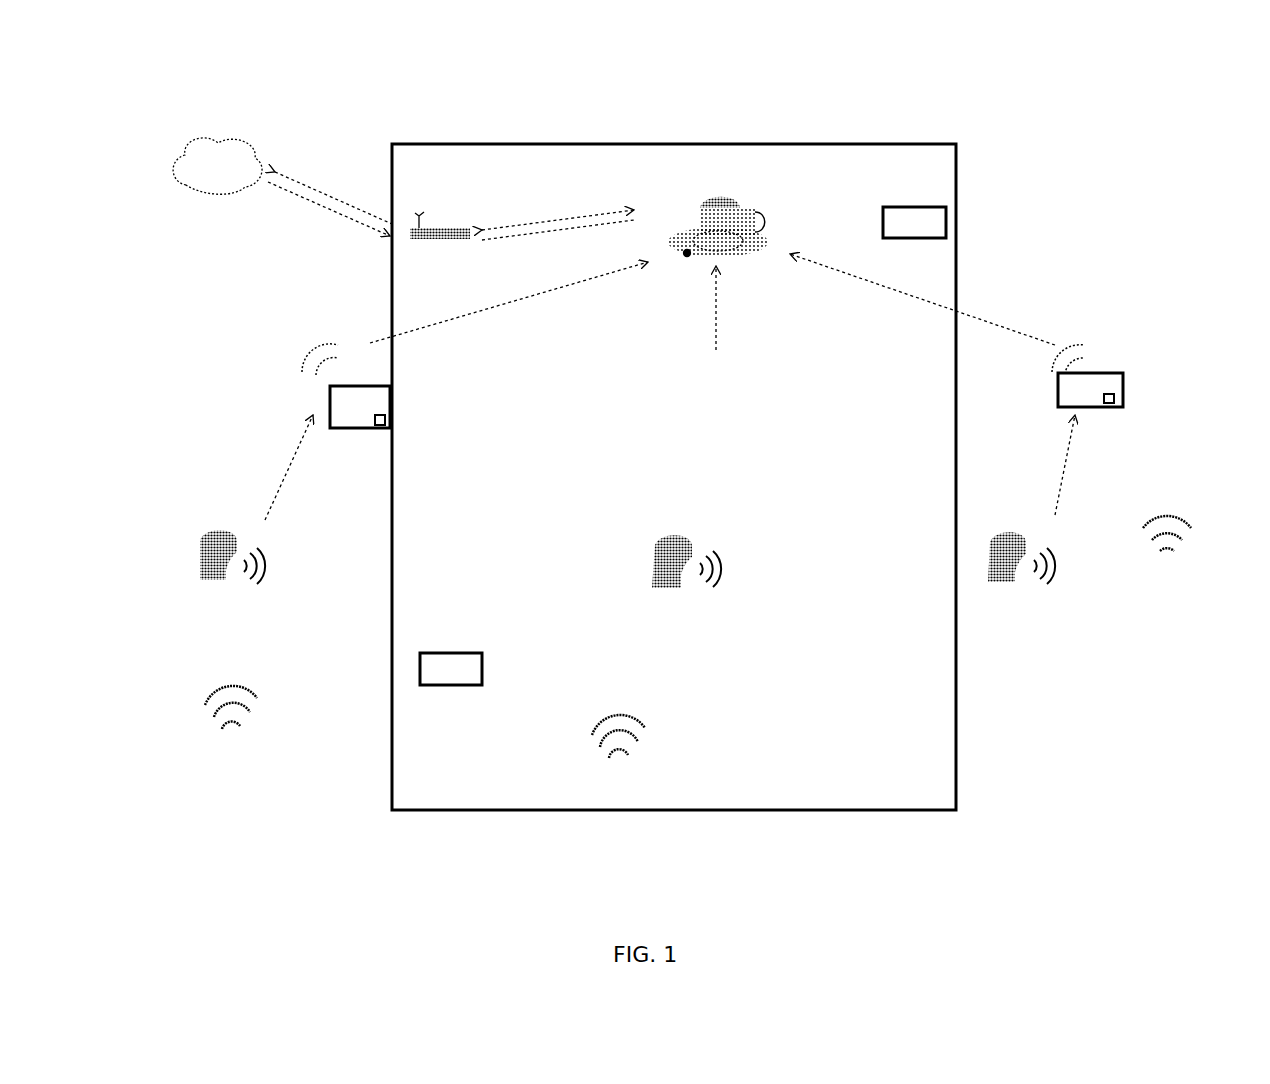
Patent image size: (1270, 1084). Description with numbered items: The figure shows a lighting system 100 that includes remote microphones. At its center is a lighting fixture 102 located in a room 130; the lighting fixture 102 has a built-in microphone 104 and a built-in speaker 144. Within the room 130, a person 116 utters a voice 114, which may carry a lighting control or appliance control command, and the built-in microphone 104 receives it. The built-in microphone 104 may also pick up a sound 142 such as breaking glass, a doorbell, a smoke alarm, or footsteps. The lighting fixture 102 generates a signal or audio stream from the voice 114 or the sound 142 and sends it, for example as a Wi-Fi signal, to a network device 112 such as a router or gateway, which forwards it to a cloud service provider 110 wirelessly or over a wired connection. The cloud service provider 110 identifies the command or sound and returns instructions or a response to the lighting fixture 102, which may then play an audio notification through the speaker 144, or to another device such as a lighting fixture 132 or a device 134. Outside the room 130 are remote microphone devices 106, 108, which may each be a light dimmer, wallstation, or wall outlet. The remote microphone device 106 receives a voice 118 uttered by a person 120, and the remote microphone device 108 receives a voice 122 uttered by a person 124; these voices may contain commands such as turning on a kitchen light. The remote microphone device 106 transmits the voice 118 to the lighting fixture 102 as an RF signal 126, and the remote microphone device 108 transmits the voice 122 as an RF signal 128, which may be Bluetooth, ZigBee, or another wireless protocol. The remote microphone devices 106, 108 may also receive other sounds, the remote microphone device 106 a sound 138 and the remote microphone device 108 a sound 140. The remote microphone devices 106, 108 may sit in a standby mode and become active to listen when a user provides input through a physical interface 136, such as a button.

The lighting system 100 is at (1040, 112).
The lighting fixture 102 is at (738, 210).
The built-in microphone 104 is at (754, 245).
The remote microphone device 106 is at (330, 398).
The remote microphone device 108 is at (1118, 382).
The cloud service provider 110 is at (215, 145).
The network device 112 is at (452, 228).
The voice 114 is at (722, 576).
The person 116 is at (660, 544).
The voice 118 is at (267, 576).
The person 120 is at (205, 541).
The voice 122 is at (1058, 575).
The person 124 is at (998, 582).
The RF signal 126 is at (305, 354).
The RF signal 128 is at (1080, 345).
The room 130 is at (392, 745).
The lighting fixture 132 is at (946, 217).
The device 134 is at (420, 668).
The physical interface 136 is at (378, 428).
The sound 138 is at (235, 728).
The sound 140 is at (1172, 520).
The sound 142 is at (626, 725).
The speaker 144 is at (687, 253).